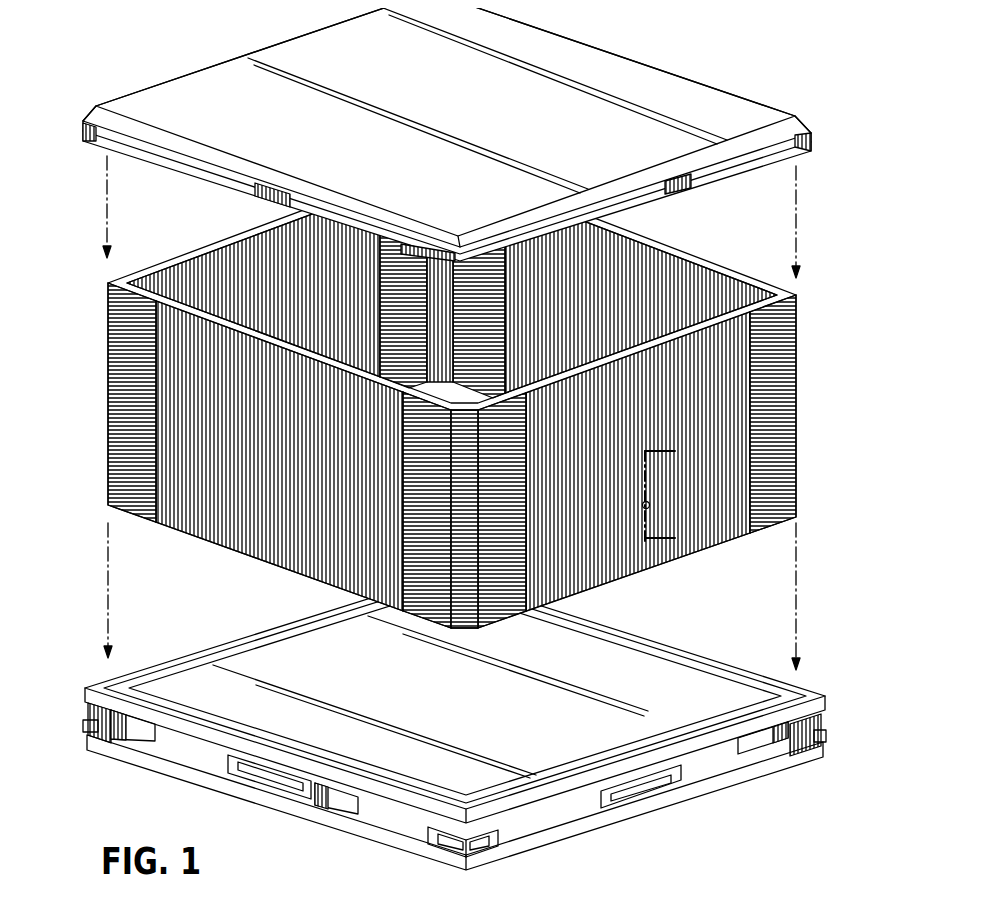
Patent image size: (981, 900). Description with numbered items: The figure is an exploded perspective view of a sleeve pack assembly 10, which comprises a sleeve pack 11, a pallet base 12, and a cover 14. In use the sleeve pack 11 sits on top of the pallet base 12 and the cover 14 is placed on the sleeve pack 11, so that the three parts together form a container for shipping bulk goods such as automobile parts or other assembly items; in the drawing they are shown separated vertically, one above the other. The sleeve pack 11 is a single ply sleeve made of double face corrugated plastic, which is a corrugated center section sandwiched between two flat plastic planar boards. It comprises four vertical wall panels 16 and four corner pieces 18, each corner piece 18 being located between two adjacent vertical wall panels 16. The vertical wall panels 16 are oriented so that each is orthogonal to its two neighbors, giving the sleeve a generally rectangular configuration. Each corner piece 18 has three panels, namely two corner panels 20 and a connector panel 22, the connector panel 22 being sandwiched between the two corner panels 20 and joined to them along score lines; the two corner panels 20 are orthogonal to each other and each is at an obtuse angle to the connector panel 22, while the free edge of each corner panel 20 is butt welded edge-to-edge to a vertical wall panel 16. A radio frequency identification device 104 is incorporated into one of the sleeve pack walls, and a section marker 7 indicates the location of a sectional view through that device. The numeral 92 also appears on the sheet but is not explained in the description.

The sleeve pack assembly 10 is at (708, 36).
The sleeve pack 11 is at (96, 459).
The pallet base 12 is at (146, 752).
The cover 14 is at (207, 55).
The vertical wall panel 16 is at (213, 233).
The corner piece 18 is at (148, 514).
The corner panel 20 is at (135, 290).
The connector panel 22 is at (100, 280).
The pallet runner 92 is at (497, 899).
The radio frequency identification device 104 is at (642, 501).
The section line 7- 7 is at (641, 512).